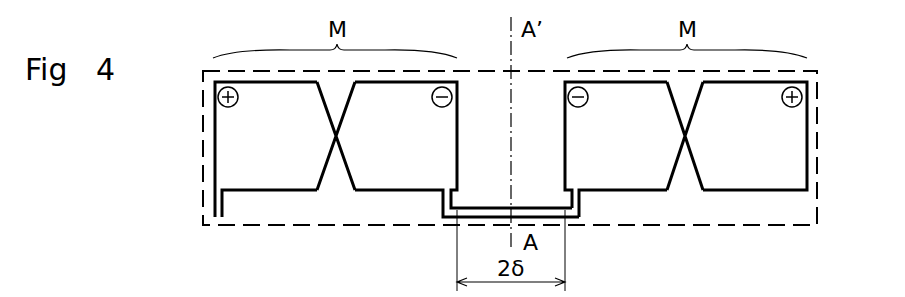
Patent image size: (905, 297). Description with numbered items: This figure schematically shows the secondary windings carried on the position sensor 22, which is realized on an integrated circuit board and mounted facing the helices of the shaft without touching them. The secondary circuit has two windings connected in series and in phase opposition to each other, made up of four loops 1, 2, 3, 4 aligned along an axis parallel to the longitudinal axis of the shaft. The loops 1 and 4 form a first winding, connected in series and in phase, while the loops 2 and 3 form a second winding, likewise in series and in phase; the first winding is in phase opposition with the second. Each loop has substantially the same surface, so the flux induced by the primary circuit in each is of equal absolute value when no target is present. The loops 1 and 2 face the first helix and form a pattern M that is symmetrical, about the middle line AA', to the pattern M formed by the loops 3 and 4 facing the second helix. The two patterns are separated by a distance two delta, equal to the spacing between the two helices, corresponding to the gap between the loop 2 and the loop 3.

The position sensor 22 is at (203, 150).
The loop 1 is at (285, 149).
The loop 2 is at (467, 149).
The loop 3 is at (634, 149).
The loop 4 is at (755, 136).